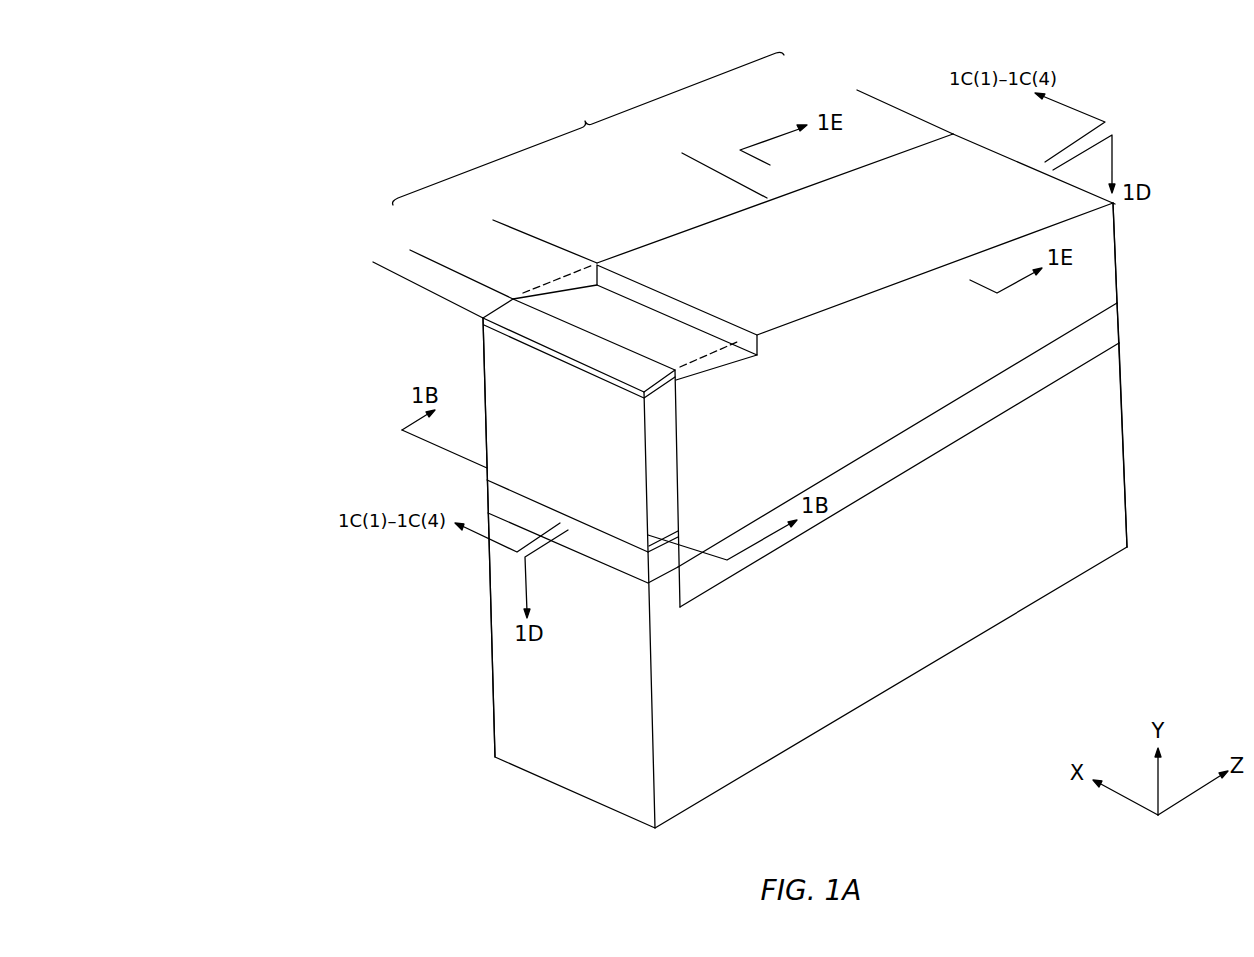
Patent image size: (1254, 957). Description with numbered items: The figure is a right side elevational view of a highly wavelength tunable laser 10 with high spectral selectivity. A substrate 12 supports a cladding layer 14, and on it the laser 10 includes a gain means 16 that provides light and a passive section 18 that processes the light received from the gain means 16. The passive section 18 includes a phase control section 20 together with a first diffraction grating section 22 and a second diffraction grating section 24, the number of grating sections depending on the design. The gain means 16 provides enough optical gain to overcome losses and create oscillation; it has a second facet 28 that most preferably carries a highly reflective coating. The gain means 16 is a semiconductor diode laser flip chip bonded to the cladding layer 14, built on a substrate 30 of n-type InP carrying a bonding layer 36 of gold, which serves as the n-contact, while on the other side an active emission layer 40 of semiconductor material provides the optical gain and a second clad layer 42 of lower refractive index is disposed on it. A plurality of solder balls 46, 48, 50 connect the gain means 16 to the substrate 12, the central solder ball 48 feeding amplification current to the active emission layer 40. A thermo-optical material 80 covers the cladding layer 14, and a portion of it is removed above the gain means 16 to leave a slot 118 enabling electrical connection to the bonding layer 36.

The laser 10 is at (270, 107).
The substrate 12 is at (1005, 525).
The cladding layer 14 is at (1005, 397).
The gain means 16 is at (411, 252).
The passive section 18 is at (588, 128).
The phase control section 20 is at (494, 219).
The first diffraction grating section 22 is at (681, 144).
The second diffraction grating section 24 is at (848, 84).
The second facet 28 is at (547, 432).
The substrate 30 is at (647, 434).
The bonding layer 36 is at (565, 355).
The active emission layer 40 is at (652, 540).
The second clad layer 42 is at (680, 532).
The solder ball 46 is at (516, 527).
The central solder ball 48 is at (516, 527).
The solder ball 50 is at (487, 500).
The thermo-optical material 80 is at (1004, 325).
The slot 118 is at (540, 293).